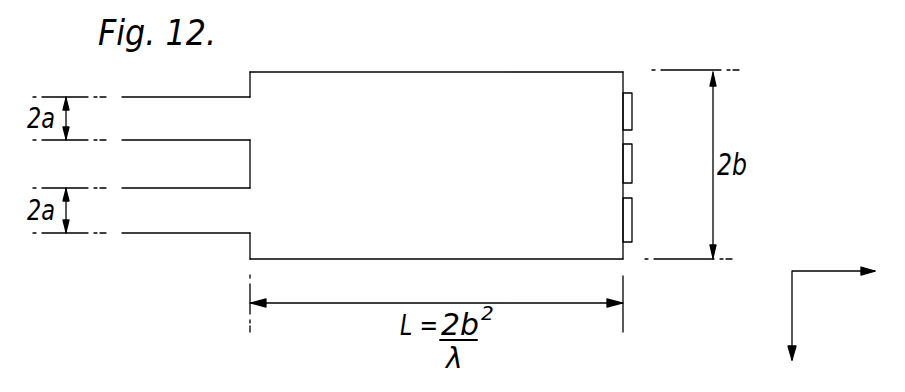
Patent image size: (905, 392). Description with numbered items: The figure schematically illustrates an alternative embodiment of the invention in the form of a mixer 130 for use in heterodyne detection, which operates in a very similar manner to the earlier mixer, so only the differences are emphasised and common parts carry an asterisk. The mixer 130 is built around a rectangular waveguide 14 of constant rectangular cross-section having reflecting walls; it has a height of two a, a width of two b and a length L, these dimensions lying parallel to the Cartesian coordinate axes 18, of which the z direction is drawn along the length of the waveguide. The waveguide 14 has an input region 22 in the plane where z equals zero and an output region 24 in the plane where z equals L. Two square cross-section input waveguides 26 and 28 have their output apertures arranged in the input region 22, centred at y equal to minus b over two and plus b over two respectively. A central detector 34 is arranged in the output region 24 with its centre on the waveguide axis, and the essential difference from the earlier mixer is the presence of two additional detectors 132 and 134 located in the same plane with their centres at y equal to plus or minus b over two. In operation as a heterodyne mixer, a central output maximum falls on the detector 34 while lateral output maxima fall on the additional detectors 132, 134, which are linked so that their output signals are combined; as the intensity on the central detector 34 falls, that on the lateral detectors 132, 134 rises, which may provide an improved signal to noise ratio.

The mixer 130 is at (362, 52).
The rectangular waveguide 14 is at (473, 84).
The input region 22 is at (242, 252).
The output region 24 is at (632, 66).
The input waveguide 26 is at (181, 93).
The input waveguide 28 is at (153, 235).
The additional detector 132 is at (633, 107).
The detector 34 is at (633, 162).
The additional detector 134 is at (633, 218).
The Cartesian coordinate axes 18 is at (792, 284).